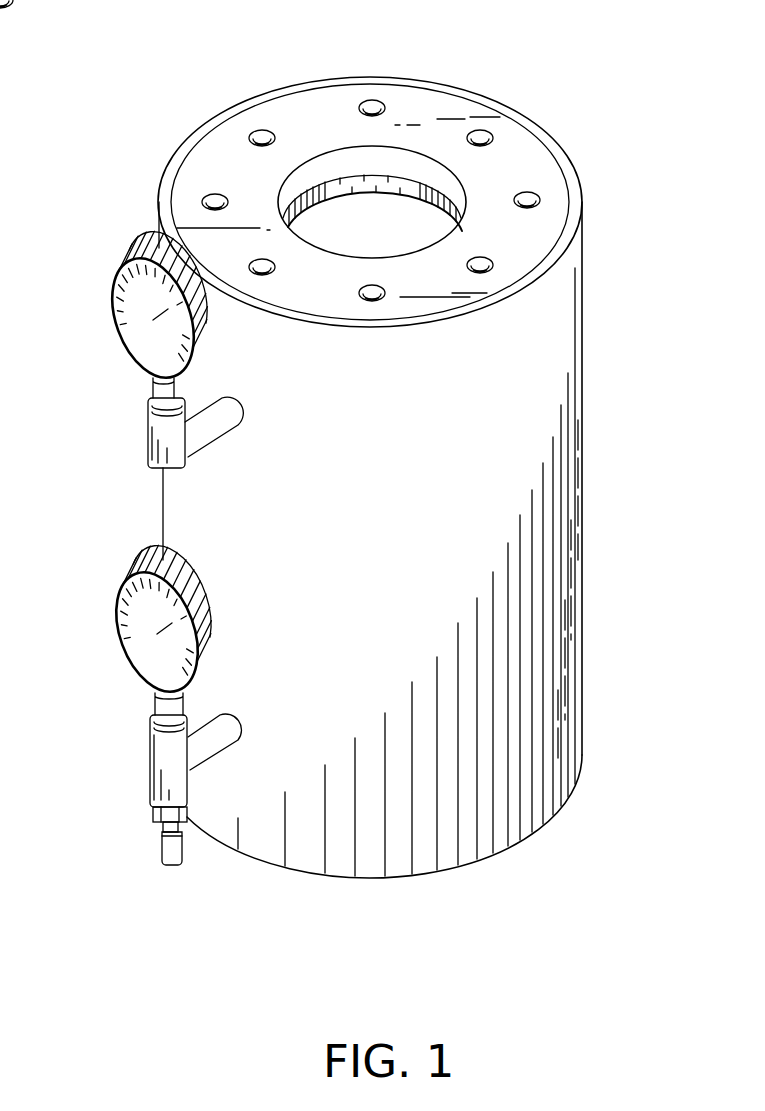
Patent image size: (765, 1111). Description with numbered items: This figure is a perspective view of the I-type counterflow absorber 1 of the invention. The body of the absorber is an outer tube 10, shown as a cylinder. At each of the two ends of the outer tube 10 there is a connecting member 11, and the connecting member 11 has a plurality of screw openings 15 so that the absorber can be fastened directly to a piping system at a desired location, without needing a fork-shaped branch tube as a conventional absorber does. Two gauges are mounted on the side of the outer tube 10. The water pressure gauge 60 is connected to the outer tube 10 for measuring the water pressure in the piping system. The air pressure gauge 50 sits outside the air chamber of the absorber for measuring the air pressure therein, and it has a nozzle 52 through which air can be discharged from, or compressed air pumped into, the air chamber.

The I-type counterflow absorber 1 is at (341, 451).
The outer tube 10 is at (582, 330).
The connecting member 11 is at (422, 102).
The screw openings 15 is at (367, 100).
The air pressure gauge 50 is at (123, 647).
The nozzle 52 is at (158, 848).
The water pressure gauge 60 is at (120, 330).